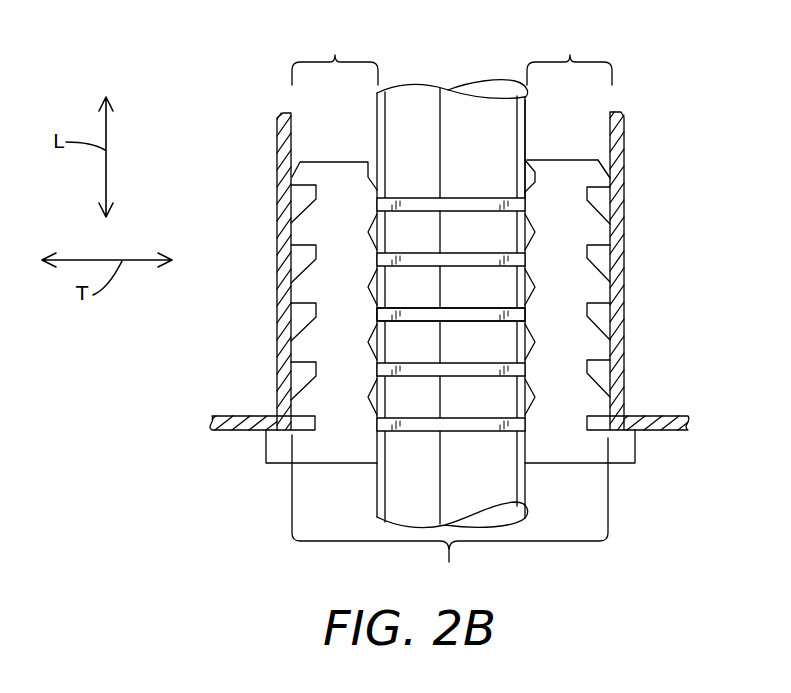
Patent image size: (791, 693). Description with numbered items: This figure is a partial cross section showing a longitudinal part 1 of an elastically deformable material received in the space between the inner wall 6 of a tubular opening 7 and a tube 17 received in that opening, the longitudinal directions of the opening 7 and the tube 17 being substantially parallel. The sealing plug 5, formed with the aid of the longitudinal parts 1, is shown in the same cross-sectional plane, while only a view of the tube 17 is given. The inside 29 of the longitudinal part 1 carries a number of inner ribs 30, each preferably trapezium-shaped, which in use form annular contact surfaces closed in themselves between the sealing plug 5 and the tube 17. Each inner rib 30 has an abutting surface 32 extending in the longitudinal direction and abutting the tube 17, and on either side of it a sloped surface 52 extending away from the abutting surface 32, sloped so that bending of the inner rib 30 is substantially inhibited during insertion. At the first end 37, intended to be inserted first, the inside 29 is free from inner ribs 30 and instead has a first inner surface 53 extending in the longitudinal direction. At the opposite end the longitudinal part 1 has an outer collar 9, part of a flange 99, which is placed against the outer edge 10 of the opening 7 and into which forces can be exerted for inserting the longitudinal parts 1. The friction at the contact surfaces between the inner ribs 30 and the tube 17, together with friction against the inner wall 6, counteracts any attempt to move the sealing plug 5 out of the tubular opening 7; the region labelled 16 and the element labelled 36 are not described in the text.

The longitudinal part 1 is at (606, 317).
The sealing plug 5 is at (612, 265).
The inner wall 6 is at (291, 128).
The tubular opening 7 is at (450, 515).
The outer collar 9 is at (275, 463).
The outer edge 10 is at (262, 424).
The retention region 16 is at (452, 53).
The tube 17 is at (492, 84).
The inside 29 is at (376, 195).
The inner rib 30 is at (376, 316).
The abutting surface 32 is at (388, 198).
The top plate 36 is at (598, 161).
The first end 37 is at (583, 160).
The sloped surface 52 is at (369, 229).
The first inner surface 53 is at (516, 140).
The flange 99 is at (636, 462).